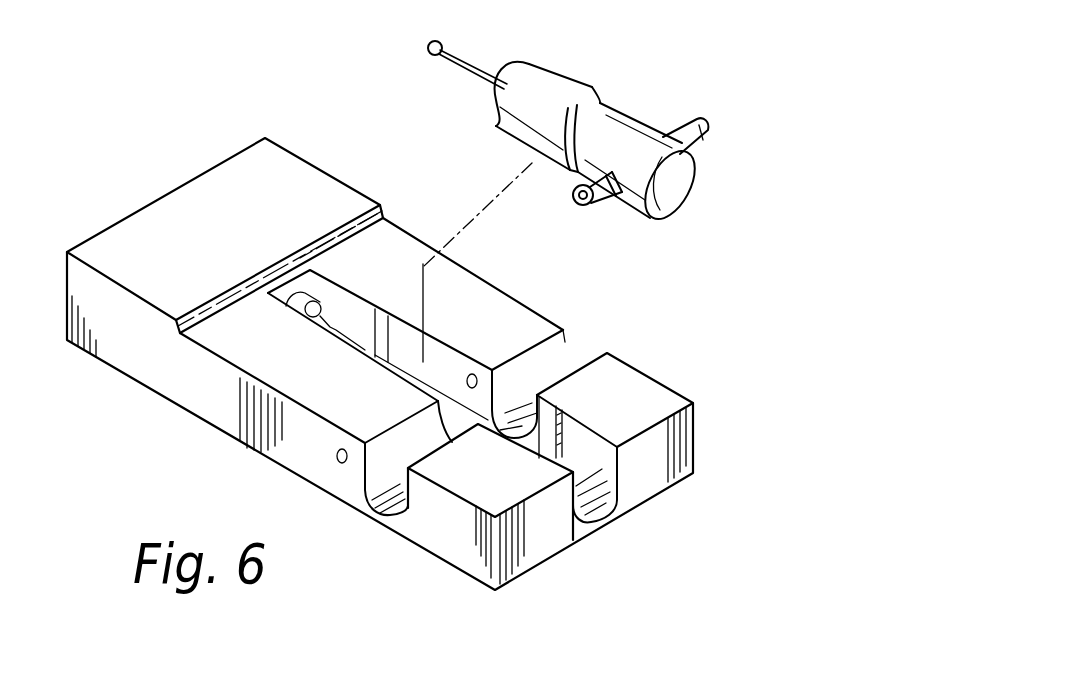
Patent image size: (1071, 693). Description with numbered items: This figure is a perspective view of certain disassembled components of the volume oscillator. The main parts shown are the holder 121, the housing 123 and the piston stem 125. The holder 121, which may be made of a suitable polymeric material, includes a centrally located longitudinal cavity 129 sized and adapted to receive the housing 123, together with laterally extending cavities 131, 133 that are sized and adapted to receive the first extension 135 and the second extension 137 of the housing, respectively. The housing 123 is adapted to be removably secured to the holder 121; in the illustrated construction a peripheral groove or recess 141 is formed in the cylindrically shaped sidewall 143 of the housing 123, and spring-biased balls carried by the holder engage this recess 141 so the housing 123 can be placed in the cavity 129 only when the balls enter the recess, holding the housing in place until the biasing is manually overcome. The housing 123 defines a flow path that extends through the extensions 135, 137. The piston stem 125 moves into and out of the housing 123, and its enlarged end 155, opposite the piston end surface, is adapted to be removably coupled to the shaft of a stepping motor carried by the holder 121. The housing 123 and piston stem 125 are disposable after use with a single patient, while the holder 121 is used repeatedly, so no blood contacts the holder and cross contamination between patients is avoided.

The holder 121 is at (262, 459).
The housing 123 is at (570, 73).
The piston stem 125 is at (470, 70).
The longitudinal cavity 129 is at (408, 338).
The laterally extending cavity 131 is at (383, 513).
The laterally extending cavity 133 is at (557, 355).
The first extension 135 is at (604, 198).
The second extension 137 is at (707, 128).
The peripheral groove or recess 141 is at (602, 104).
The cylindrically shaped sidewall 143 is at (570, 103).
The enlarged end 155 is at (428, 53).